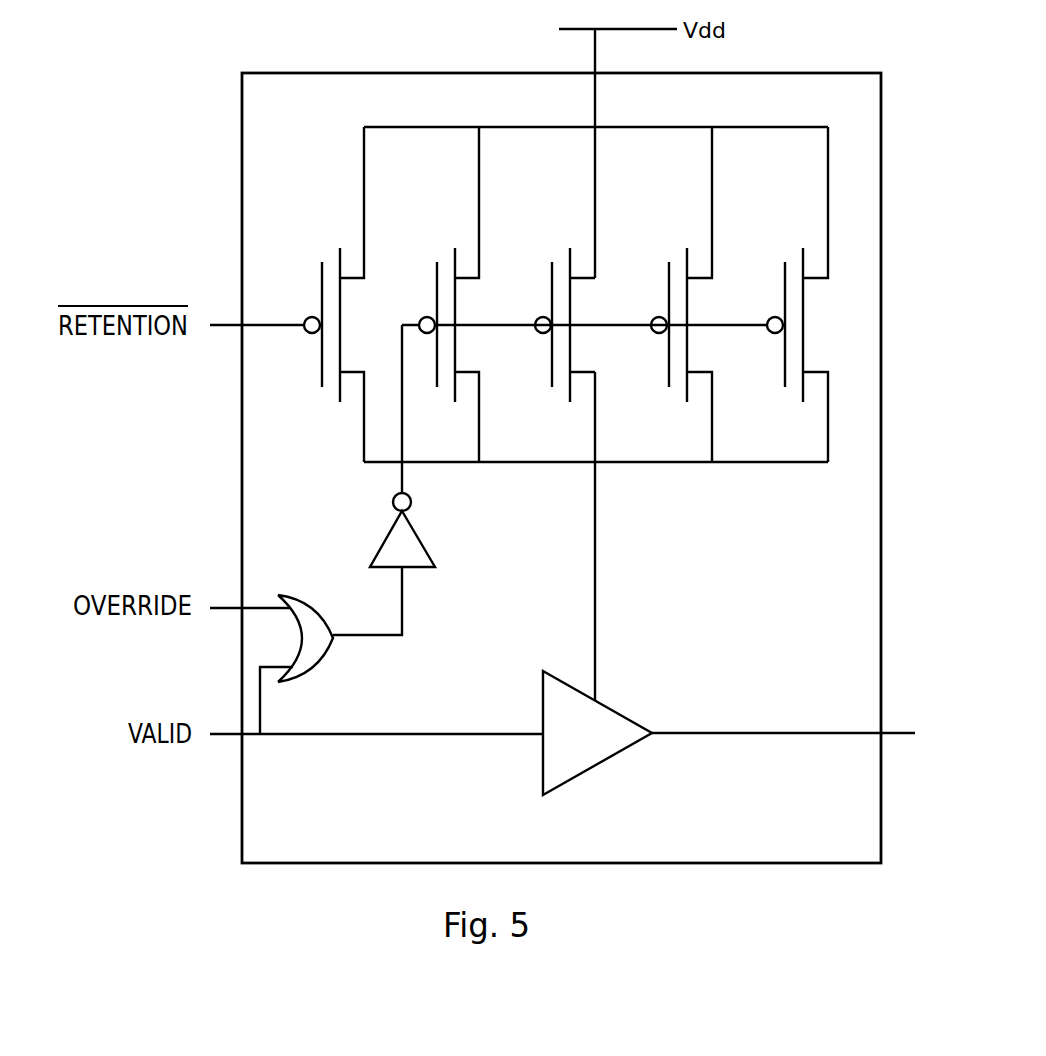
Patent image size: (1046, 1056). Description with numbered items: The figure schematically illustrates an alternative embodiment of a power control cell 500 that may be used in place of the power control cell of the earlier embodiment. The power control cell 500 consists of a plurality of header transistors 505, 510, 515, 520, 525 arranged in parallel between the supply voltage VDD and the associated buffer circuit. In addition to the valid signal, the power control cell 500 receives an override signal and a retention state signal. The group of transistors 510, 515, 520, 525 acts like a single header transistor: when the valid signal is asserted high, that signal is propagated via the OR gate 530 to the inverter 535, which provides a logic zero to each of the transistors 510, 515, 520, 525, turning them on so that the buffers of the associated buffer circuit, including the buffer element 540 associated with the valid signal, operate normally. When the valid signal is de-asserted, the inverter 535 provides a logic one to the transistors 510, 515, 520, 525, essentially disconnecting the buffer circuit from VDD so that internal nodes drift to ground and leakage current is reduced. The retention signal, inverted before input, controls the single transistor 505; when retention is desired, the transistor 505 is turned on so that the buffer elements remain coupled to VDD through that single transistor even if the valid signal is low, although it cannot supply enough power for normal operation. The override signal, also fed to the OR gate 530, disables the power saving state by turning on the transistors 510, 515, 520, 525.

The power control cell 500 is at (840, 73).
The header transistor 505 is at (320, 279).
The header transistor 510 is at (435, 279).
The header transistor 515 is at (550, 279).
The header transistor 520 is at (667, 279).
The header transistor 525 is at (783, 279).
The OR gate 530 is at (333, 655).
The inverter 535 is at (427, 536).
The buffer element 540 is at (598, 763).